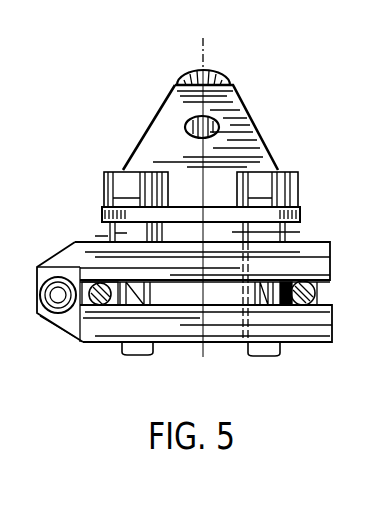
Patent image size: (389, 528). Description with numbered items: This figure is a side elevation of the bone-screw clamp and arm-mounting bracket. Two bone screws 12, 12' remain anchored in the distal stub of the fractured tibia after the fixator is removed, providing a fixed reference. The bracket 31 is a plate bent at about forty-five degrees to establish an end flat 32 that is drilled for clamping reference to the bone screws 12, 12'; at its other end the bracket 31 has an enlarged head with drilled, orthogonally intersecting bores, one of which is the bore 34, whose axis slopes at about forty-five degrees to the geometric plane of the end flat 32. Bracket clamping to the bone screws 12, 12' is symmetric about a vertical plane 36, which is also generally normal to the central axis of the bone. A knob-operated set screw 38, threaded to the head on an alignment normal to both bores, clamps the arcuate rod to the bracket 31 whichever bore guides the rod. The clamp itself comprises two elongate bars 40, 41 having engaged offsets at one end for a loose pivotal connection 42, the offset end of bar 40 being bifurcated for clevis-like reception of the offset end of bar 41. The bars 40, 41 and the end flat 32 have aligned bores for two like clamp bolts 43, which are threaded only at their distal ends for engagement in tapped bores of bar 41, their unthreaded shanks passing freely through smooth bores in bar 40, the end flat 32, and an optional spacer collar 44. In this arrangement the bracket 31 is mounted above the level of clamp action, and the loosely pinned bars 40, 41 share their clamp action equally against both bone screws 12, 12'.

The bone screw 12 is at (218, 310).
The bone screw 12' is at (139, 366).
The bracket 31 is at (266, 138).
The end flat 32 is at (175, 216).
The bore 34 is at (190, 117).
The vertical plane of symmetry 36 is at (207, 62).
The set screw 38 is at (181, 79).
The bar 40 is at (307, 258).
The bar 41 is at (177, 331).
The pivotal connection 42 is at (45, 315).
The clamp bolt 43 is at (115, 280).
The spacer collar 44 is at (120, 233).